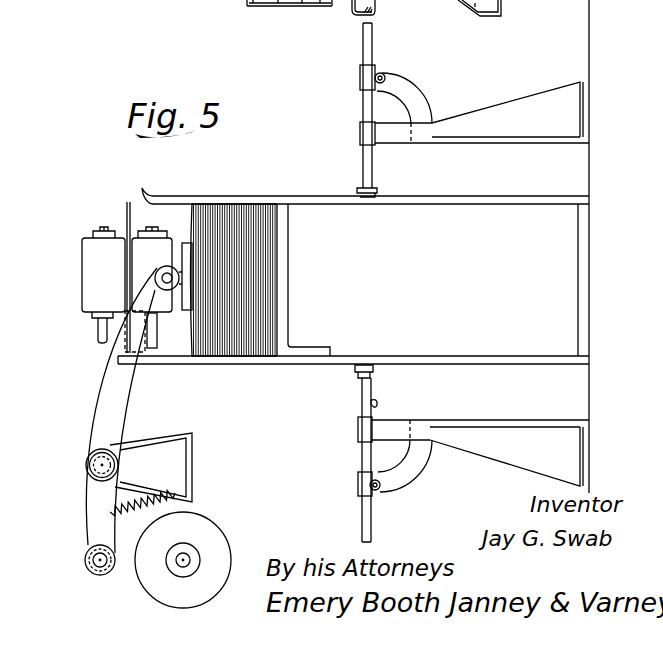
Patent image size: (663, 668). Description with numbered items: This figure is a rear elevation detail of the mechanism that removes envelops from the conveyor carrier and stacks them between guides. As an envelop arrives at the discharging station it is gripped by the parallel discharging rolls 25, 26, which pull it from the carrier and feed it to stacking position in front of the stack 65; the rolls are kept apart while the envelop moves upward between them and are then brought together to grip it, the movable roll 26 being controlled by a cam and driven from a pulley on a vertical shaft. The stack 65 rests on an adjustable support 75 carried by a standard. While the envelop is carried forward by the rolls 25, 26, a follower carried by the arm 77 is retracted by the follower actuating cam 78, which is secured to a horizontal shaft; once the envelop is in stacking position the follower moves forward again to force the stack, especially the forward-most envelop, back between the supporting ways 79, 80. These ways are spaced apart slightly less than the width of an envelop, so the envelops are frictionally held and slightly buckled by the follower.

The discharging roll 25 is at (92, 255).
The discharging roll 26 is at (157, 251).
The stack of envelops 65 is at (232, 217).
The adjustable support 75 is at (365, 393).
The arm 77 is at (103, 407).
The follower actuating cam 78 is at (185, 532).
The supporting way 79 is at (242, 358).
The supporting way 80 is at (293, 205).